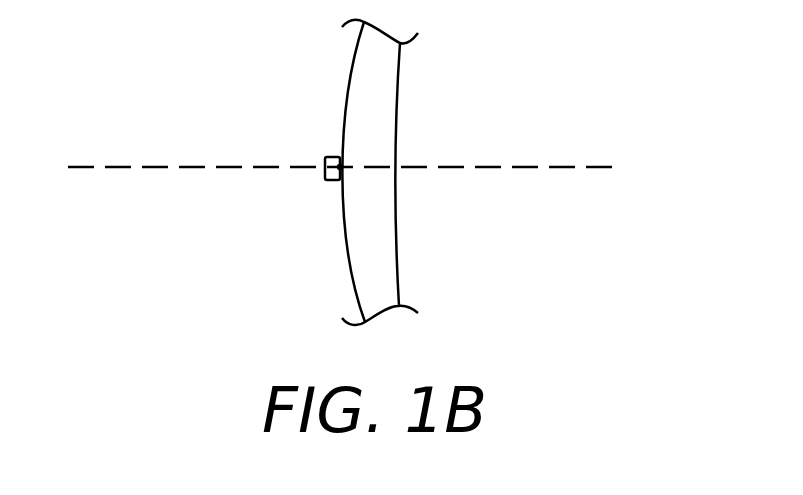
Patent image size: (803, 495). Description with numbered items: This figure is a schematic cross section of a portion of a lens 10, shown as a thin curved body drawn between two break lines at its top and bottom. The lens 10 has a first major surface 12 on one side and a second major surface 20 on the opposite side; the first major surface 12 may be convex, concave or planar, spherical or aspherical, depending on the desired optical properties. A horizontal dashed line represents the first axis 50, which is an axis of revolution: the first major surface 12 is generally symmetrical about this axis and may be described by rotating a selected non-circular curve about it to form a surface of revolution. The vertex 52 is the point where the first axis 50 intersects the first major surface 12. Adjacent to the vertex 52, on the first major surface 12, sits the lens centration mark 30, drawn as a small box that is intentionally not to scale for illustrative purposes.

The lens 10 is at (512, 45).
The first major surface 12 is at (341, 239).
The second major surface 20 is at (397, 229).
The lens centration mark 30 is at (327, 157).
The first axis 50 is at (155, 165).
The vertex 52 is at (340, 167).